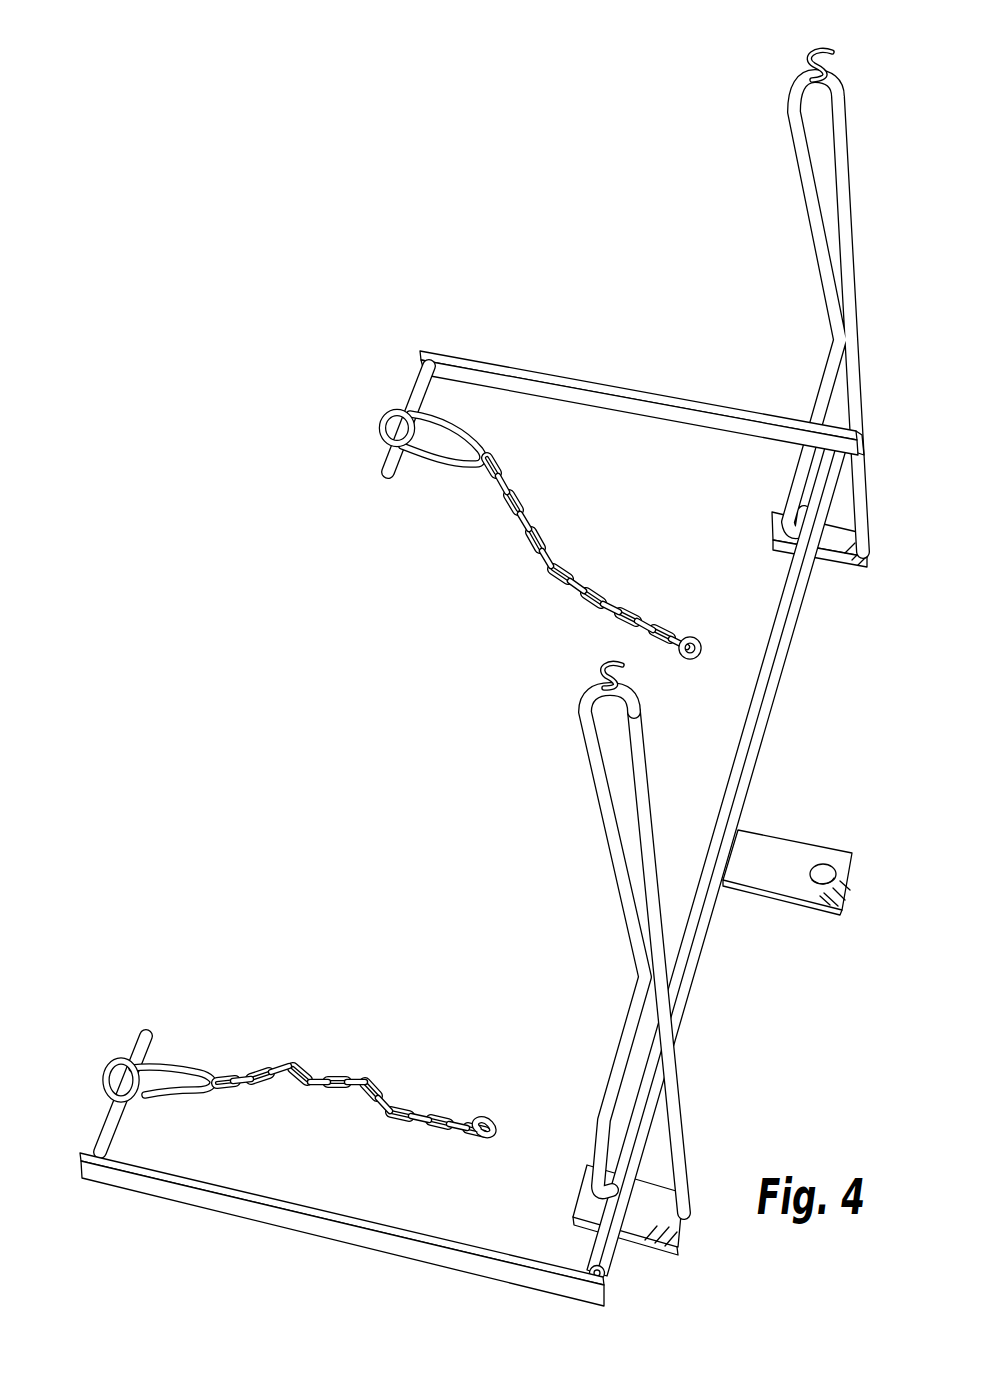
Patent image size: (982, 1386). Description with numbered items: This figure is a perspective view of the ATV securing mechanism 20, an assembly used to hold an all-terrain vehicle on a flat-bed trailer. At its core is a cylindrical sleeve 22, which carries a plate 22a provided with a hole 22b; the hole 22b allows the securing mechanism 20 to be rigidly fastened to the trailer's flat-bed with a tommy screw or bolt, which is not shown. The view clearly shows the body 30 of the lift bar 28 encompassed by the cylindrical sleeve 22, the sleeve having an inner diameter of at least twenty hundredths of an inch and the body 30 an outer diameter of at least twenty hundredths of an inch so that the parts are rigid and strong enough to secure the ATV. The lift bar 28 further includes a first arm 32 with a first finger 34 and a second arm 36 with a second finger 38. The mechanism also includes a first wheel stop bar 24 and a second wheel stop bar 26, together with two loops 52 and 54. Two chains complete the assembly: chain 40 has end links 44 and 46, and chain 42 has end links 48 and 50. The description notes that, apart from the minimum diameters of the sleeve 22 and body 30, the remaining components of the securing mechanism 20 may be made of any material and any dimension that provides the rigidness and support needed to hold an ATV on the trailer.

The ATV securing mechanism 20 is at (464, 655).
The cylindrical sleeve 22 is at (717, 867).
The plate 22a is at (787, 876).
The hole 22b is at (805, 862).
The first wheel stop bar 24 is at (688, 1113).
The second wheel stop bar 26 is at (825, 278).
The lift bar 28 is at (642, 389).
The body 30 is at (606, 1275).
The first arm 32 is at (292, 1232).
The first finger 34 is at (102, 1100).
The second arm 36 is at (508, 366).
The second finger 38 is at (414, 372).
The chain 40 is at (388, 1072).
The chain 42 is at (574, 557).
The end link 44 is at (165, 1068).
The end link 46 is at (495, 1127).
The end link 48 is at (380, 420).
The end link 50 is at (690, 639).
The loop 52 is at (600, 670).
The loop 54 is at (822, 47).